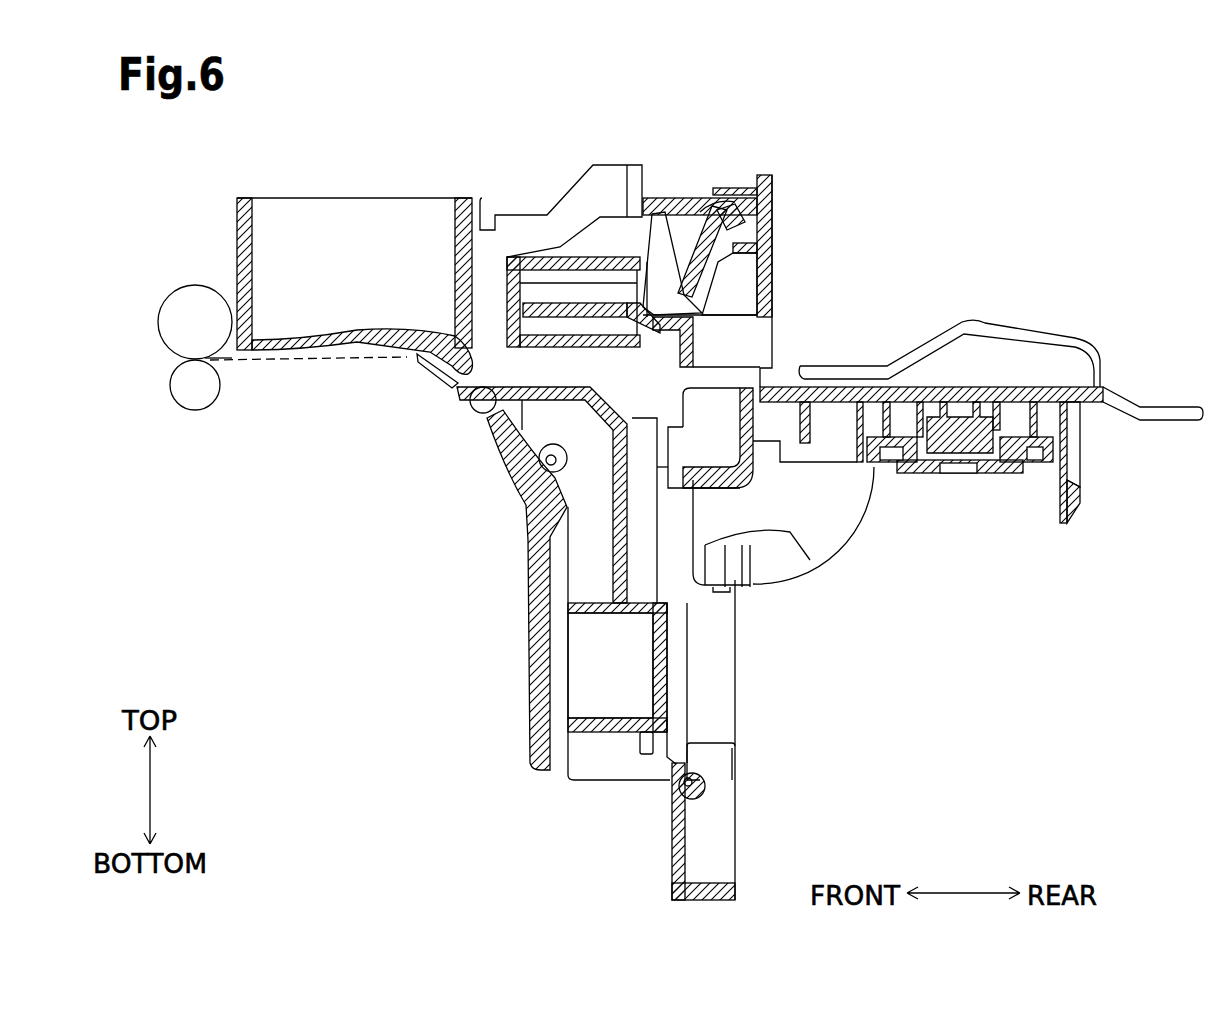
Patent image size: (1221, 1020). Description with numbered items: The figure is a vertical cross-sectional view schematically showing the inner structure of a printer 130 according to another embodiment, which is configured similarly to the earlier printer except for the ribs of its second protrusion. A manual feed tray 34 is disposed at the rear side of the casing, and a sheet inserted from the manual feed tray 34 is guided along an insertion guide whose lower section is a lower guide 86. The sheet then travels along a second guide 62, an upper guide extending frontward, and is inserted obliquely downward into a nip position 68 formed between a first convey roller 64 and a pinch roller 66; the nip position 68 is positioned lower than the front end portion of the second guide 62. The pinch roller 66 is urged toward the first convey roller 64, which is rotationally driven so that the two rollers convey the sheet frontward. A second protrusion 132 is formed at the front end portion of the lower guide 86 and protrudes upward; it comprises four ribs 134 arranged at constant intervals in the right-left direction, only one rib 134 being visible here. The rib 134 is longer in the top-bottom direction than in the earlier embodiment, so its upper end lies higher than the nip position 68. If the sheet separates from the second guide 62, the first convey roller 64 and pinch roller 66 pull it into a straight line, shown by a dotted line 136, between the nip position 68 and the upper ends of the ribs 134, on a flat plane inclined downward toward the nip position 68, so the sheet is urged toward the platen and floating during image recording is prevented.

The manual feed tray 34 is at (1038, 301).
The second guide 62 is at (305, 337).
The first convey roller 64 is at (177, 305).
The pinch roller 66 is at (183, 393).
The nip position 68 is at (212, 362).
The lower guide 86 is at (510, 447).
The printer 130 is at (516, 518).
The second protrusion 132 is at (410, 362).
The rib 134 is at (420, 414).
The dotted line 136 is at (337, 362).